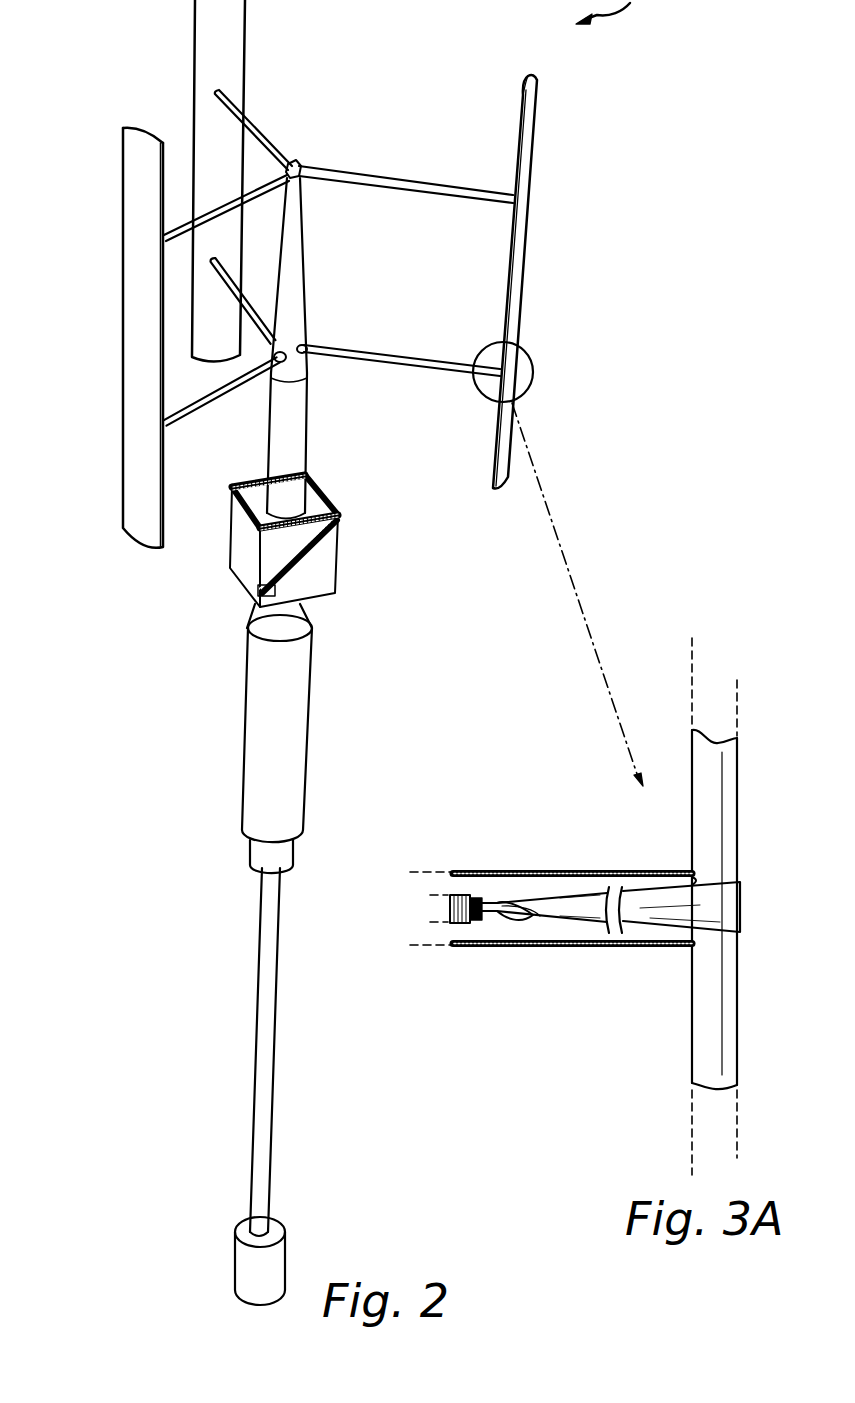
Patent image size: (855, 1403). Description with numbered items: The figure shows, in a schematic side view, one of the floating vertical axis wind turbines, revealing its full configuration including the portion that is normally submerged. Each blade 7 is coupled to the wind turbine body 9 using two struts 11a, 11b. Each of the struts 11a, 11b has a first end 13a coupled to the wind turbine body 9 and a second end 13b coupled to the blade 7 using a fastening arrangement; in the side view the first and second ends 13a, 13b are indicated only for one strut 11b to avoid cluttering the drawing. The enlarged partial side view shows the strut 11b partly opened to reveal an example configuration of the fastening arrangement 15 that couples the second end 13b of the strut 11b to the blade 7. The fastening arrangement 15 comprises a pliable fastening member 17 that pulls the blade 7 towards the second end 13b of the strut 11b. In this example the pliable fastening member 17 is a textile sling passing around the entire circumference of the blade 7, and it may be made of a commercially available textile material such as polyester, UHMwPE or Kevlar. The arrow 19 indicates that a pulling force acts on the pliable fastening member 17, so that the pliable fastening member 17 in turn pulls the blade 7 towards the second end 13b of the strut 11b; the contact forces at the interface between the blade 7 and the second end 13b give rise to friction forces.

In FIG. 2, the blade 7 is at (528, 145).
In FIG. 3A, the blade 7 is at (732, 782).
In FIG. 2, the wind turbine body 9 is at (293, 423).
In FIG. 2, the strut 11a is at (448, 188).
In FIG. 2, the strut 11b is at (398, 358).
In FIG. 3A, the strut 11b is at (547, 870).
In FIG. 2, the first end 13a is at (302, 347).
In FIG. 2, the second end 13b is at (507, 342).
In FIG. 3A, the second end 13b is at (693, 877).
In FIG. 3A, the fastening arrangement 15 is at (643, 942).
In FIG. 3A, the pliable fastening member 17 is at (582, 917).
In FIG. 3A, the arrow 19 is at (535, 890).